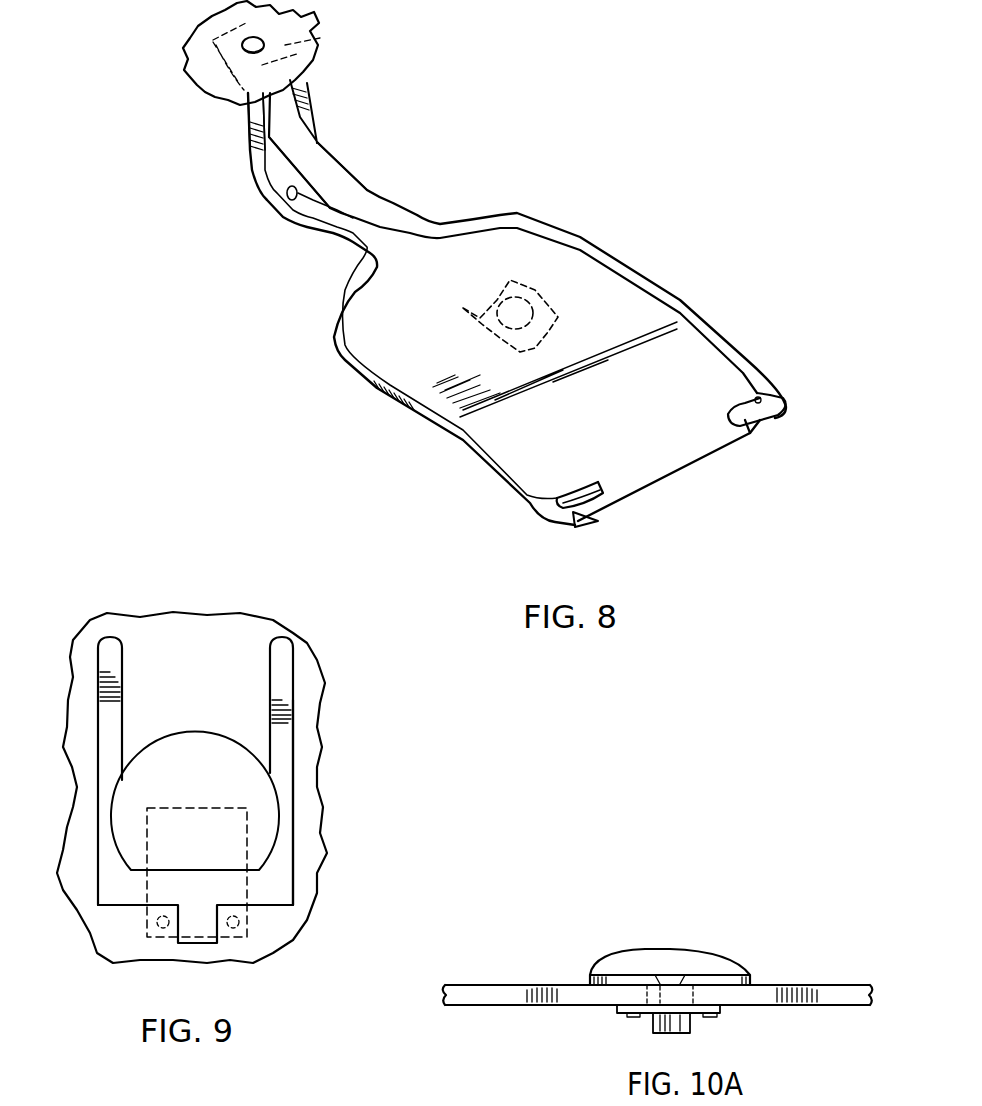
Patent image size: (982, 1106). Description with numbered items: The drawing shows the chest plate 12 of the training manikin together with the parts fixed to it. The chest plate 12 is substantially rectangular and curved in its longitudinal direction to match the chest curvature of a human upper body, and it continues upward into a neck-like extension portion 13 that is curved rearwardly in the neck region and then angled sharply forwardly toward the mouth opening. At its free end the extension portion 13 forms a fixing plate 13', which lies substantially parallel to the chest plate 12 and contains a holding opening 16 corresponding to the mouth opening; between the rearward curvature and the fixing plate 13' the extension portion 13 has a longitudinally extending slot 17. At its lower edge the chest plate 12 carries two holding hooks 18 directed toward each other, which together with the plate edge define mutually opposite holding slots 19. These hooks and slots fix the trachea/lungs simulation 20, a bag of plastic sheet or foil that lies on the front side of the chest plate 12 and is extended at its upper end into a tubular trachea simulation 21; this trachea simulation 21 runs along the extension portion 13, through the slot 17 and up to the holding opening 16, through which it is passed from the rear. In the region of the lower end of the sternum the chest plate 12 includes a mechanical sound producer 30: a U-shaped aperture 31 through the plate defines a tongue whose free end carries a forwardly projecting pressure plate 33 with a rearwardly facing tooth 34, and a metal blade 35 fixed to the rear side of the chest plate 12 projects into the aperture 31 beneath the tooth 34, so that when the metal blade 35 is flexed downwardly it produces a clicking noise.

In FIG. 8, the chest plate 12 is at (447, 212).
In FIG. 9, the chest plate 12 is at (133, 642).
In FIG. 10A, the chest plate 12 is at (498, 988).
In FIG. 8, the neck-like extension portion 13 is at (358, 137).
In FIG. 8, the fixing plate 13' is at (295, 53).
In FIG. 8, the holding opening 16 is at (265, 65).
In FIG. 8, the longitudinally extending slot 17 is at (300, 206).
In FIG. 8, the holding hook 18 is at (593, 520).
In FIG. 8, the holding slot 19 is at (560, 497).
In FIG. 8, the trachea/lungs simulation 20 is at (432, 372).
In FIG. 8, the trachea simulation 21 is at (313, 153).
In FIG. 8, the mechanical sound producer 30 is at (472, 332).
In FIG. 9, the mechanical sound producer 30 is at (267, 610).
In FIG. 9, the U-shaped aperture 31 is at (300, 785).
In FIG. 9, the pressure plate 33 is at (170, 757).
In FIG. 10A, the pressure plate 33 is at (678, 953).
In FIG. 10A, the tooth 34 is at (700, 1013).
In FIG. 9, the metal blade 35 is at (162, 882).
In FIG. 10A, the metal blade 35 is at (642, 1013).